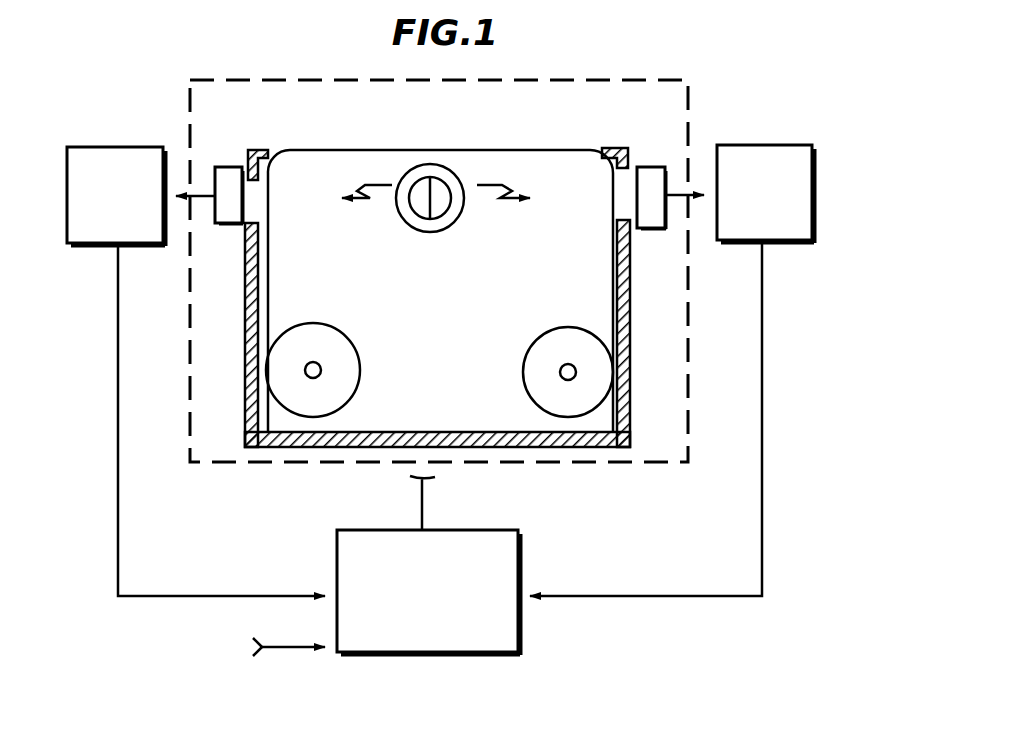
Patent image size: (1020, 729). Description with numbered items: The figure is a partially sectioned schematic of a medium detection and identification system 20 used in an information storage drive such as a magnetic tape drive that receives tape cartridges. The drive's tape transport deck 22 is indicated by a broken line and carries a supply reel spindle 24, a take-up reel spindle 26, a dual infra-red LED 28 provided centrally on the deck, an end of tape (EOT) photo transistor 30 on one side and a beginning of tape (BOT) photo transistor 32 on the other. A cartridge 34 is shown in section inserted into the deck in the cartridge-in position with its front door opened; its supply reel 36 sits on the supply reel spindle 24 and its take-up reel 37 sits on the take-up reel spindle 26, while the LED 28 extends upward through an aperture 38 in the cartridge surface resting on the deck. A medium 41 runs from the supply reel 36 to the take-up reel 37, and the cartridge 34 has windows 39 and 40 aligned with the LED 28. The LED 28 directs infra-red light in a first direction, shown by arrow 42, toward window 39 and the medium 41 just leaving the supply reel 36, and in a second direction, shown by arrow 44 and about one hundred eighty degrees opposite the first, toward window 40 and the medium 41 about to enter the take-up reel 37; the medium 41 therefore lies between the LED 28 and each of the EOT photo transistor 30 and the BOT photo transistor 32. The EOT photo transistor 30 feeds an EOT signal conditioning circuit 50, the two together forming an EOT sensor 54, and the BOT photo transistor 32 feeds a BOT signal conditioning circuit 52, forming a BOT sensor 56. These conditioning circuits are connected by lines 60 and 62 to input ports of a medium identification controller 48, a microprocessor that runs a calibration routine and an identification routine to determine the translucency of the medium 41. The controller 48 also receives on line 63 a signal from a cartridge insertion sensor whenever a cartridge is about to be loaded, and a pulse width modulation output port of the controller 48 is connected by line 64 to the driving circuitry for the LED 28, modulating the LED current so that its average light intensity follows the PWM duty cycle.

The medium detection and identification system 20 is at (850, 416).
The tape transport deck 22 is at (688, 80).
The supply reel spindle 24 is at (342, 366).
The take-up reel spindle 26 is at (538, 372).
The dual infra-red LED 28 is at (456, 214).
The EOT photo transistor 30 is at (218, 167).
The BOT photo transistor 32 is at (646, 167).
The cartridge 34 is at (630, 360).
The supply reel 36 is at (358, 386).
The take-up reel 37 is at (532, 352).
The aperture 38 is at (444, 185).
The window 39 is at (268, 210).
The window 40 is at (613, 220).
The medium 41 is at (540, 150).
The arrow (first direction) 42 is at (365, 200).
The arrow (second direction) 44 is at (512, 200).
The medium identification controller 48 is at (520, 542).
The EOT signal conditioning circuit 50 is at (90, 147).
The BOT signal conditioning circuit 52 is at (780, 145).
The EOT sensor 54 is at (164, 110).
The BOT sensor 56 is at (754, 104).
The line 60 is at (118, 490).
The line 62 is at (763, 478).
The line 63 is at (283, 649).
The line 64 is at (426, 502).